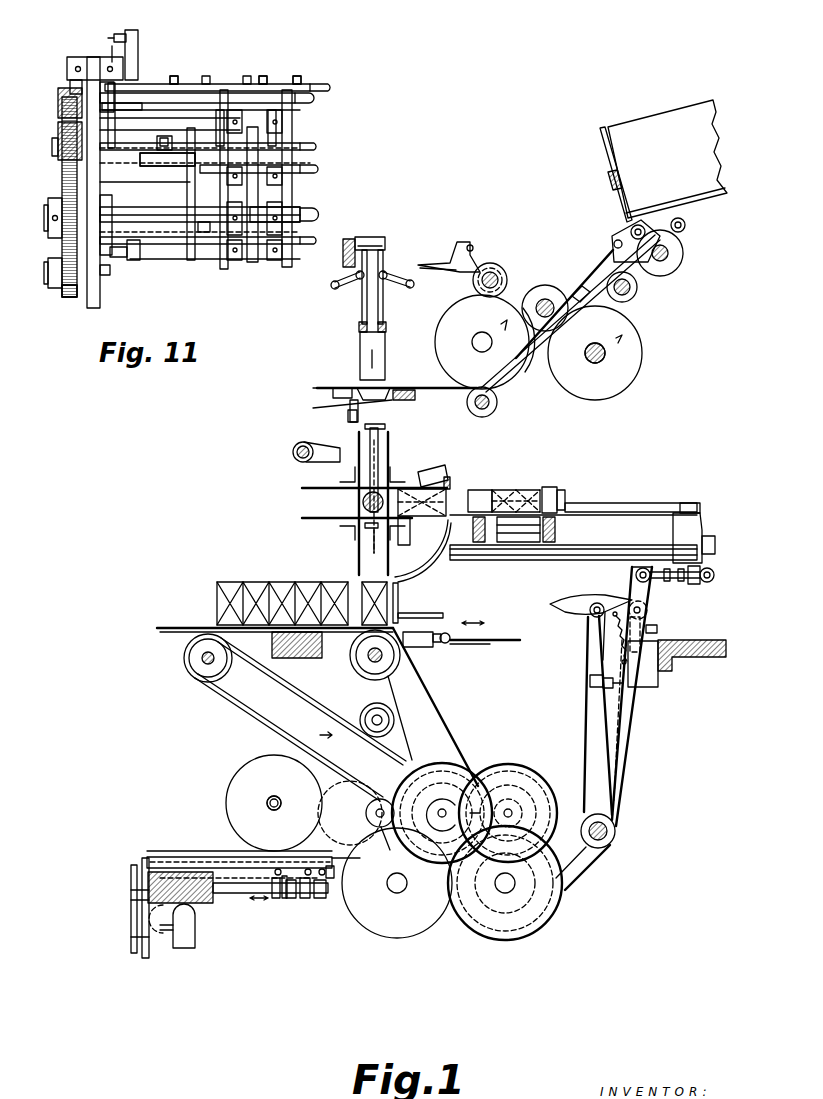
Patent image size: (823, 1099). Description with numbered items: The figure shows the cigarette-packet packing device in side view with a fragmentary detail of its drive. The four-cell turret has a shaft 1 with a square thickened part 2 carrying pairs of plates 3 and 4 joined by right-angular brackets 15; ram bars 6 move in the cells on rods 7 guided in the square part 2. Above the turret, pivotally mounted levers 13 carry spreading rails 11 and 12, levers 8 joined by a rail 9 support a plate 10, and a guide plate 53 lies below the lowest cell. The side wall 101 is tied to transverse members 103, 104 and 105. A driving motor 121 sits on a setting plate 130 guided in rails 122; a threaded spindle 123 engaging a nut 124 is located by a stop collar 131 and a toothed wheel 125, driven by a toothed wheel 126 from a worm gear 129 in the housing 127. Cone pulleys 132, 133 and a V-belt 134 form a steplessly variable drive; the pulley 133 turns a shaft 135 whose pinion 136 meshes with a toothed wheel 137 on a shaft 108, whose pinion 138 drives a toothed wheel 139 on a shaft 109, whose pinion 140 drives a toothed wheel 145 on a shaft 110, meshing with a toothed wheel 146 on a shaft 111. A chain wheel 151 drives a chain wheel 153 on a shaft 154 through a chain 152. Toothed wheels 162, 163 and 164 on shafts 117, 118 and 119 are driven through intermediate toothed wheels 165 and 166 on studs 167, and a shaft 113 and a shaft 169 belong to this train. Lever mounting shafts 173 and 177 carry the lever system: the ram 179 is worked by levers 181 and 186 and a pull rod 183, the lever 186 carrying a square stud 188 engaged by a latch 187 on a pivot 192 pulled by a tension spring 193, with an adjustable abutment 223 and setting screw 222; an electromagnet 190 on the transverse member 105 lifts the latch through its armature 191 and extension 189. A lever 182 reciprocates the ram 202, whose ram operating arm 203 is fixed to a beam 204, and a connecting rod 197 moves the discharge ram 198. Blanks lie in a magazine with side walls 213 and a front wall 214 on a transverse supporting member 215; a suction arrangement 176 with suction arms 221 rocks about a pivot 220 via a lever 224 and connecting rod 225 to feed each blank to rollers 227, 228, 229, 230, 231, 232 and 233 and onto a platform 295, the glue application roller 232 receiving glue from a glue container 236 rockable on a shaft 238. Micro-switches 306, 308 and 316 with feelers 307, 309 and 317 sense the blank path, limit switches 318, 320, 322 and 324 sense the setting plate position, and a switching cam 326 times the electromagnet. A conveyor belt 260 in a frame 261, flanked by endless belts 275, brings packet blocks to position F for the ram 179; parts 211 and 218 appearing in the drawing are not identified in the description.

In FIG. 1, the shaft 1 is at (364, 500).
In FIG. 1, the thickened part 2 is at (364, 512).
In FIG. 1, the plates 3 is at (390, 448).
In FIG. 1, the plates 4 is at (348, 450).
In FIG. 1, the ram bars 6 is at (400, 429).
In FIG. 1, the rods 7 is at (380, 462).
In FIG. 1, the levers 8 is at (430, 471).
In FIG. 1, the rail 9 is at (447, 477).
In FIG. 1, the plate 10 is at (448, 490).
In FIG. 1, the rail 11 is at (358, 326).
In FIG. 1, the rail 12 is at (387, 325).
In FIG. 1, the pivotally mounted levers 13 is at (384, 270).
In FIG. 1, the right-angular brackets 15 is at (345, 480).
In FIG. 1, the guide plate 53 is at (186, 626).
In FIG. 11, the side wall 101 is at (100, 305).
In FIG. 1, the transverse member 103 is at (168, 875).
In FIG. 1, the transverse member 104 is at (300, 658).
In FIG. 1, the transverse member 105 is at (725, 657).
In FIG. 1, the shaft 108 is at (445, 808).
In FIG. 1, the shaft 109 is at (512, 810).
In FIG. 1, the shaft 110 is at (504, 893).
In FIG. 1, the shaft 111 is at (400, 890).
In FIG. 1, the shaft 113 is at (485, 345).
In FIG. 11, the shaft 117 is at (118, 215).
In FIG. 1, the shaft 117 is at (600, 360).
In FIG. 11, the shaft 118 is at (133, 128).
In FIG. 1, the shaft 118 is at (637, 290).
In FIG. 11, the shaft 119 is at (172, 108).
In FIG. 1, the shaft 119 is at (667, 258).
In FIG. 1, the driving motor 121 is at (250, 770).
In FIG. 1, the rails 122 is at (142, 860).
In FIG. 1, the threaded spindle 123 is at (240, 893).
In FIG. 1, the nut 124 is at (278, 912).
In FIG. 1, the toothed wheel 125 is at (131, 870).
In FIG. 1, the toothed wheel 126 is at (131, 942).
In FIG. 1, the housing 127 is at (170, 935).
In FIG. 1, the worm gear 129 is at (178, 925).
In FIG. 1, the setting plate 130 is at (330, 880).
In FIG. 1, the stop collar 131 is at (215, 857).
In FIG. 1, the cone pulley 132 is at (248, 796).
In FIG. 1, the cone pulley 133 is at (362, 828).
In FIG. 1, the V-belt 134 is at (296, 750).
In FIG. 1, the shaft 135 is at (382, 820).
In FIG. 1, the pinion 136 is at (366, 810).
In FIG. 1, the toothed wheel 137 is at (418, 790).
In FIG. 1, the pinion 138 is at (478, 800).
In FIG. 1, the toothed wheel 139 is at (524, 775).
In FIG. 1, the pinion 140 is at (506, 800).
In FIG. 1, the toothed wheel 145 is at (522, 930).
In FIG. 1, the toothed wheel 146 is at (390, 930).
In FIG. 1, the chain wheel 151 is at (485, 880).
In FIG. 1, the chain 152 is at (436, 702).
In FIG. 1, the chain wheel 153 is at (377, 675).
In FIG. 1, the shaft 154 is at (365, 660).
In FIG. 11, the toothed wheel 162 is at (62, 250).
In FIG. 11, the toothed wheel 163 is at (62, 170).
In FIG. 11, the toothed wheel 164 is at (60, 125).
In FIG. 11, the intermediate toothed wheel 165 is at (69, 291).
In FIG. 11, the intermediate toothed wheel 166 is at (68, 292).
In FIG. 11, the studs 167 is at (50, 280).
In FIG. 1, the studs 167 is at (488, 408).
In FIG. 1, the shaft 169 is at (492, 275).
In FIG. 1, the lever mounting shaft 173 is at (294, 456).
In FIG. 11, the suction arrangement 176 is at (322, 88).
In FIG. 1, the suction arrangement 176 is at (685, 228).
In FIG. 1, the lever mounting shaft 177 is at (616, 832).
In FIG. 1, the ram 179 is at (620, 510).
In FIG. 1, the lever 181 is at (622, 722).
In FIG. 1, the lever 182 is at (588, 838).
In FIG. 1, the pull rod 183 is at (702, 580).
In FIG. 1, the lever 186 is at (588, 630).
In FIG. 1, the latch 187 is at (556, 603).
In FIG. 1, the square stud 188 is at (595, 604).
In FIG. 1, the extension 189 is at (642, 642).
In FIG. 1, the electromagnet 190 is at (648, 672).
In FIG. 1, the electromagnet armature 191 is at (657, 628).
In FIG. 1, the pivot 192 is at (644, 608).
In FIG. 1, the tension spring 193 is at (614, 628).
In FIG. 1, the connecting rod 197 is at (490, 638).
In FIG. 1, the discharge ram 198 is at (400, 600).
In FIG. 1, the ram 202 is at (368, 345).
In FIG. 1, the ram operating arm 203 is at (368, 238).
In FIG. 1, the beam 204 is at (338, 240).
In FIG. 1, the links 211 is at (331, 286).
In FIG. 1, the side walls 213 is at (640, 125).
In FIG. 1, the front wall 214 is at (602, 128).
In FIG. 1, the transverse supporting member 215 is at (608, 175).
In FIG. 1, the slide block 218 is at (420, 642).
In FIG. 11, the pivot 220 is at (67, 66).
In FIG. 11, the suction arms 221 is at (176, 84).
In FIG. 1, the suction arms 221 is at (660, 225).
In FIG. 1, the setting screw 222 is at (590, 684).
In FIG. 1, the adjustable abutment 223 is at (598, 690).
In FIG. 11, the lever 224 is at (70, 84).
In FIG. 11, the connecting rod 225 is at (141, 58).
In FIG. 11, the rollers 227 is at (222, 112).
In FIG. 1, the rollers 227 is at (683, 255).
In FIG. 11, the rollers 228 is at (221, 108).
In FIG. 1, the rollers 228 is at (640, 225).
In FIG. 11, the rollers 229 is at (222, 200).
In FIG. 1, the rollers 229 is at (642, 372).
In FIG. 11, the rollers 230 is at (230, 165).
In FIG. 1, the rollers 230 is at (548, 288).
In FIG. 11, the rollers 231 is at (278, 262).
In FIG. 1, the glue application roller 232 is at (512, 362).
In FIG. 1, the rollers 233 is at (476, 414).
In FIG. 1, the glue container 236 is at (438, 262).
In FIG. 1, the shaft 238 is at (475, 243).
In FIG. 1, the conveyor belt 260 is at (432, 555).
In FIG. 1, the frame 261 is at (556, 531).
In FIG. 1, the endless belts 275 is at (478, 490).
In FIG. 1, the platform 295 is at (358, 388).
In FIG. 11, the micro-switch 306 is at (208, 118).
In FIG. 1, the micro-switch 306 is at (582, 288).
In FIG. 11, the feeler 307 is at (172, 166).
In FIG. 1, the feeler 307 is at (580, 310).
In FIG. 1, the micro-switch 308 is at (343, 388).
In FIG. 1, the feeler 309 is at (326, 386).
In FIG. 1, the micro-switch 316 is at (350, 418).
In FIG. 1, the feeler 317 is at (360, 410).
In FIG. 1, the limit switch 318 is at (320, 905).
In FIG. 1, the limit switch 320 is at (305, 905).
In FIG. 1, the limit switch 322 is at (290, 905).
In FIG. 1, the limit switch 324 is at (275, 900).
In FIG. 1, the switching cam 326 is at (336, 872).
In FIG. 1, the position F is at (528, 497).